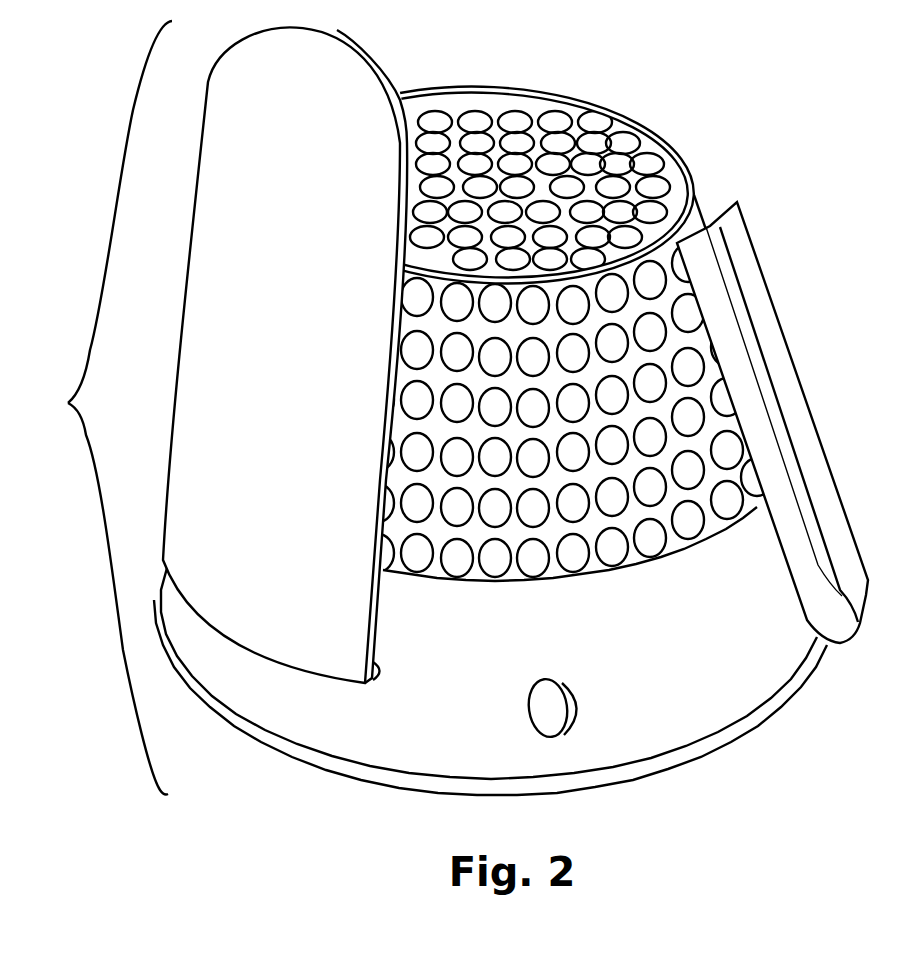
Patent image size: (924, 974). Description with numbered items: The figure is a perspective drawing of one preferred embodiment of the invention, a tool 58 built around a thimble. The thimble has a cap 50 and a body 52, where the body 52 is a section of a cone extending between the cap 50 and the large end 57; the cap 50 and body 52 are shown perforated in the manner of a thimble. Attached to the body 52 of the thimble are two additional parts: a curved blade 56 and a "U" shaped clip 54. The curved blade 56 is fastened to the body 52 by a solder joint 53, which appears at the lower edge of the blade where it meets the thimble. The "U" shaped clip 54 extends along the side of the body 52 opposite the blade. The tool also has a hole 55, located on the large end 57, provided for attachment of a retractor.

The cap 50 is at (643, 122).
The body 52 is at (703, 214).
The solder joint 53 is at (381, 676).
The "U" shaped clip 54 is at (797, 357).
The hole 55 is at (528, 726).
The curved blade 56 is at (210, 82).
The large end 57 is at (677, 768).
The tool 58 is at (98, 408).